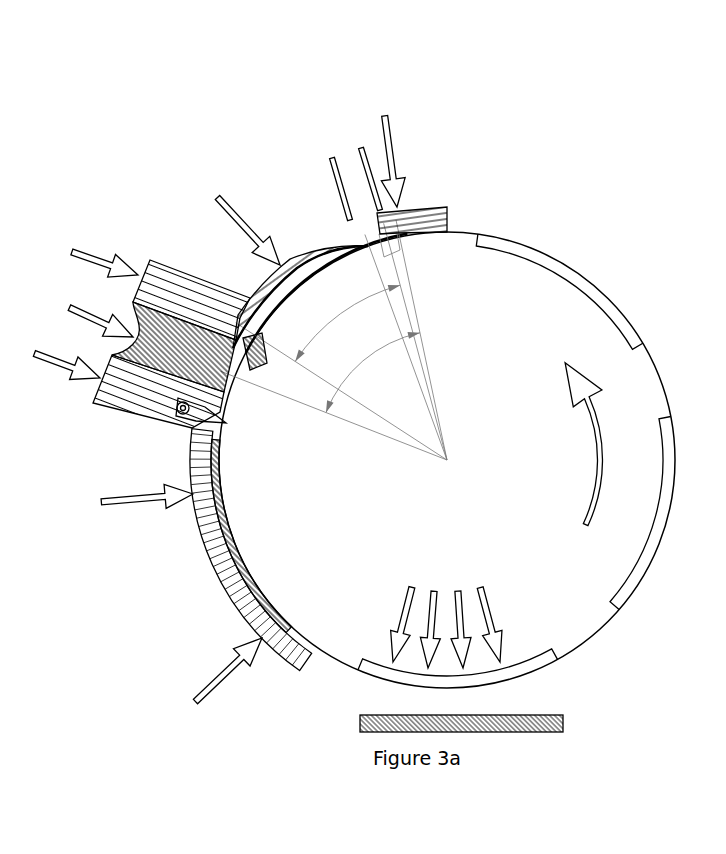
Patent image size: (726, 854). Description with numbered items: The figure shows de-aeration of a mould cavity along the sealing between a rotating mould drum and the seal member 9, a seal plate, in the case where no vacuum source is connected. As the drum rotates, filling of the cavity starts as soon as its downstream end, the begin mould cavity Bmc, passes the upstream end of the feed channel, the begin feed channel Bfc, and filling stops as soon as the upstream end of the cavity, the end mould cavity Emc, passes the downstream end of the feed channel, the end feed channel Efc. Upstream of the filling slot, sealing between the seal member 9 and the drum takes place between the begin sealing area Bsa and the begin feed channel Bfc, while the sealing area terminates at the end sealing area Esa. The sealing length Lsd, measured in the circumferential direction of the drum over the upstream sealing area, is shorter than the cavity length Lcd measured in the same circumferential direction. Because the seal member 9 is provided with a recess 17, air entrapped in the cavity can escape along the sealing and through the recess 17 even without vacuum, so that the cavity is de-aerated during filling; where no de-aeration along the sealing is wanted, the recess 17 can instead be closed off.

The recess 17 is at (362, 233).
The seal member 9 is at (210, 527).
The begin feed channel Bfc is at (242, 337).
The begin mould cavity Bmc is at (227, 347).
The end feed channel Efc is at (213, 403).
The begin sealing area Bsa is at (352, 235).
The end mould cavity Emc is at (397, 232).
The end sealing area Esa is at (316, 655).
The cavity length in circumferential direction mould drum Lcd is at (347, 321).
The sealing length in upstream sealing area mould drum Lsd is at (370, 369).